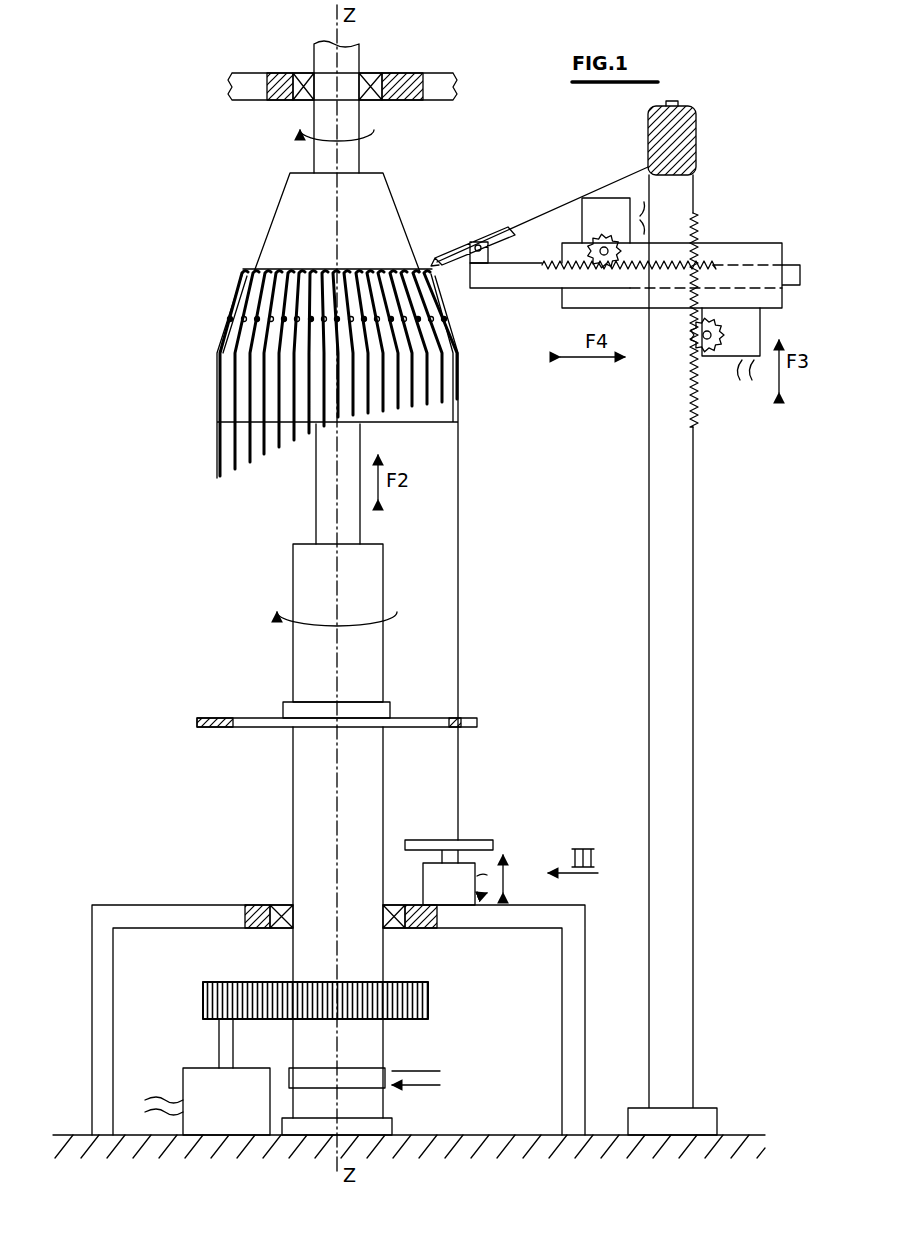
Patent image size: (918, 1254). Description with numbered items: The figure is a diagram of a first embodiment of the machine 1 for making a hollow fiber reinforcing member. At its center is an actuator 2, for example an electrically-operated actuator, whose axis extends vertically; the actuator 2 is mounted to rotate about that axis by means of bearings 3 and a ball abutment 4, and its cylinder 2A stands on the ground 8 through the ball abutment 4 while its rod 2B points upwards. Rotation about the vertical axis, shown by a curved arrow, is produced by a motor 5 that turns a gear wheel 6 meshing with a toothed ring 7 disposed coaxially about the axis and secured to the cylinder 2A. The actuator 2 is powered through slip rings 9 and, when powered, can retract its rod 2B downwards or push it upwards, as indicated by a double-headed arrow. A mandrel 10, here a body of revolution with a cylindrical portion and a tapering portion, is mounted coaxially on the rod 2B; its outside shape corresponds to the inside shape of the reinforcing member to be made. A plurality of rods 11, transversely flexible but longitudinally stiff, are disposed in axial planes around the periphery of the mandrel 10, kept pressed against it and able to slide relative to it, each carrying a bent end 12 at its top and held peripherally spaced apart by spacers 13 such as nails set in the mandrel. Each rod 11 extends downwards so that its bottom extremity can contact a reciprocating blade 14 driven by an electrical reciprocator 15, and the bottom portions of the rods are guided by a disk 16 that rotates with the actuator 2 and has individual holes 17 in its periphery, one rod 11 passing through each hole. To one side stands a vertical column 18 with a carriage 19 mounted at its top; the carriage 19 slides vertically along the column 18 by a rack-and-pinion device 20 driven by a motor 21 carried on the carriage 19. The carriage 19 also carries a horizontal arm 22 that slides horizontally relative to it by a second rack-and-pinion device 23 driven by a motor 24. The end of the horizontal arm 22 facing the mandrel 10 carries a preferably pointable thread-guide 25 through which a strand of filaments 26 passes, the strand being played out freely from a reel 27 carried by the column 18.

The machine 1 is at (218, 622).
The actuator 2 is at (293, 806).
The cylinder 2A is at (365, 820).
The rod 2B is at (320, 507).
The bearings 3 is at (300, 73).
The ball abutment 4 is at (393, 1126).
The motor 5 is at (200, 1072).
The gear wheel 6 is at (207, 992).
The toothed ring 7 is at (430, 1003).
The ground 8 is at (524, 1135).
The slip rings 9 is at (370, 1068).
The mandrel 10 is at (297, 195).
The rods 11 is at (240, 440).
The bent ends 12 is at (288, 265).
The spacers 13 is at (252, 312).
The reciprocating blade 14 is at (478, 840).
The electrical reciprocator 15 is at (448, 890).
The disk 16 is at (269, 718).
The holes 17 is at (218, 718).
The column 18 is at (649, 543).
The carriage 19 is at (736, 245).
The rack-and-pinion device 20 is at (700, 356).
The motor 21 is at (752, 331).
The horizontal arm 22 is at (533, 288).
The rack-and-pinion device 23 is at (552, 241).
The motor 24 is at (618, 205).
The thread-guide 25 is at (458, 246).
The strand of filaments 26 is at (574, 196).
The reel 27 is at (680, 145).